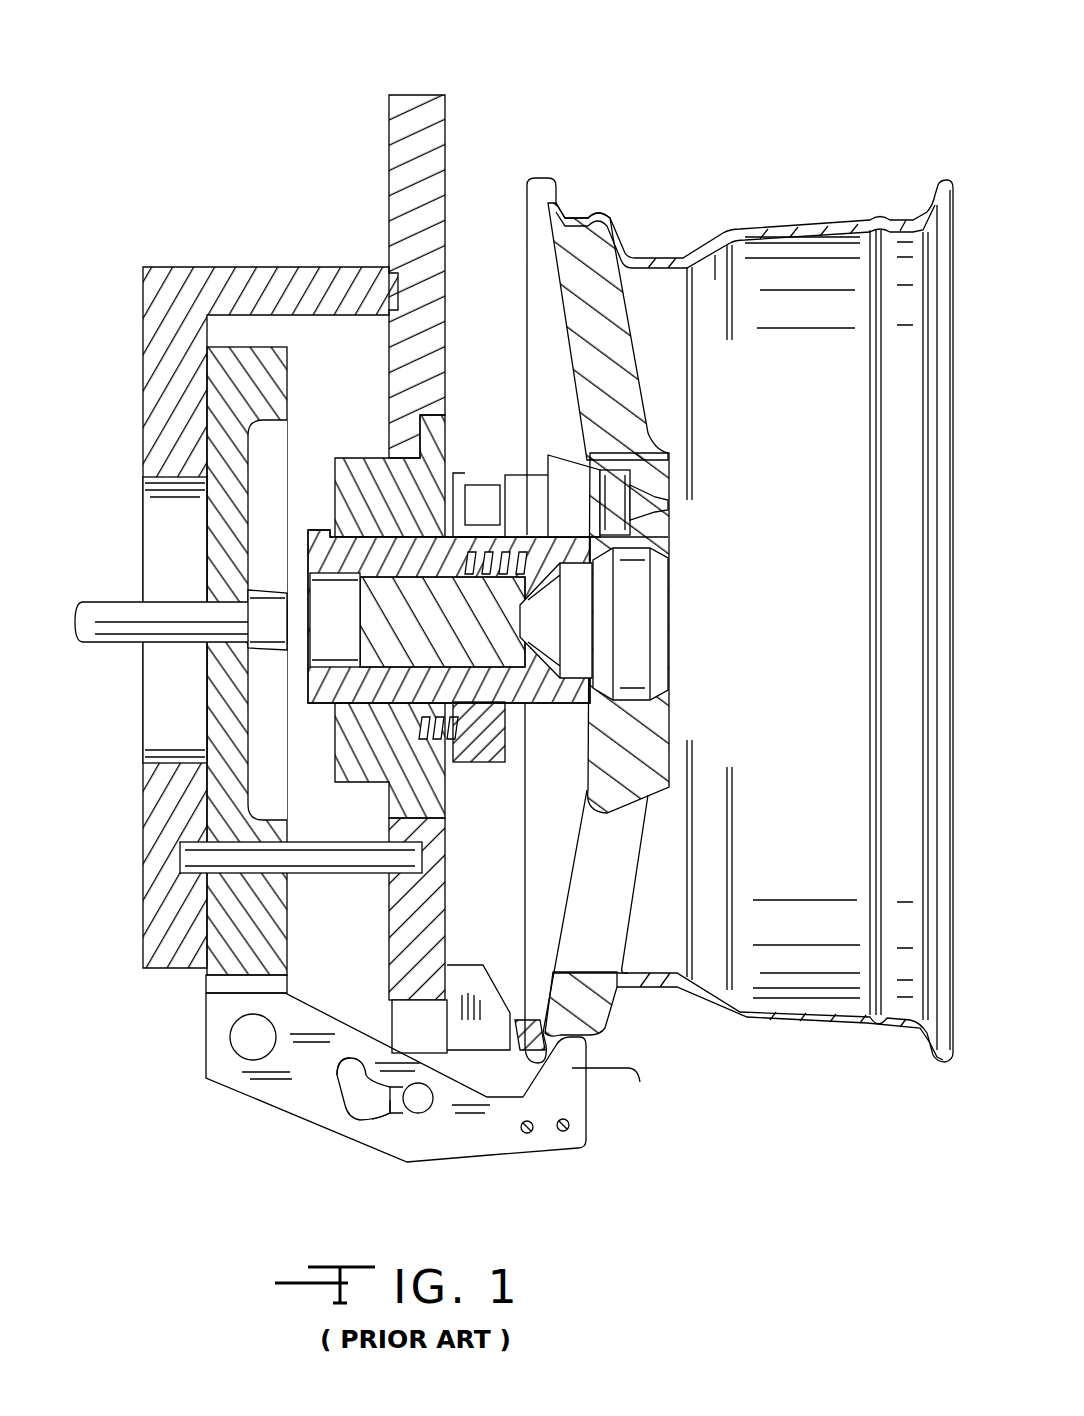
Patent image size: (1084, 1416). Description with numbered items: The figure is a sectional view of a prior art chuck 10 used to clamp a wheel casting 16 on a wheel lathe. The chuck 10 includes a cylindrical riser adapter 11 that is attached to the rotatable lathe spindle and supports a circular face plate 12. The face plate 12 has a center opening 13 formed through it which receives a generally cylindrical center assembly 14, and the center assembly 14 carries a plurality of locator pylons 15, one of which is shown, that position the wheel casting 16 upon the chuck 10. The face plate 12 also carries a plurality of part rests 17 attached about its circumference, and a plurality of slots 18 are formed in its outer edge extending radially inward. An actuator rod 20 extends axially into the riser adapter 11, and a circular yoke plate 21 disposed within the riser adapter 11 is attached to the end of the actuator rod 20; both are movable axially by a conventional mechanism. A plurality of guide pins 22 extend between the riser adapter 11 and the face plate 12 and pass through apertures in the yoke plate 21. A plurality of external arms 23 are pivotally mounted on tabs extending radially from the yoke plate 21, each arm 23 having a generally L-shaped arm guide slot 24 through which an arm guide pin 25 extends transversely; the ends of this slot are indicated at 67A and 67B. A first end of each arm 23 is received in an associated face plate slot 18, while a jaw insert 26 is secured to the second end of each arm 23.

The chuck 10 is at (330, 85).
The riser adapter 11 is at (150, 365).
The face plate 12 is at (448, 130).
The center opening 13 is at (383, 452).
The center assembly 14 is at (322, 523).
The locator pylon 15 is at (600, 518).
The wheel casting 16 is at (700, 145).
The part rest 17 is at (467, 982).
The slot 18 is at (432, 1046).
The actuator rod 20 is at (108, 645).
The yoke plate 21 is at (222, 957).
The guide pin 22 is at (352, 862).
The external arm 23 is at (365, 1140).
The arm guide slot 24 is at (343, 1100).
The arm guide pin 25 is at (424, 1106).
The jaw insert 26 is at (578, 1070).
The slot end 67A is at (402, 1122).
The slot end 67B is at (330, 1073).